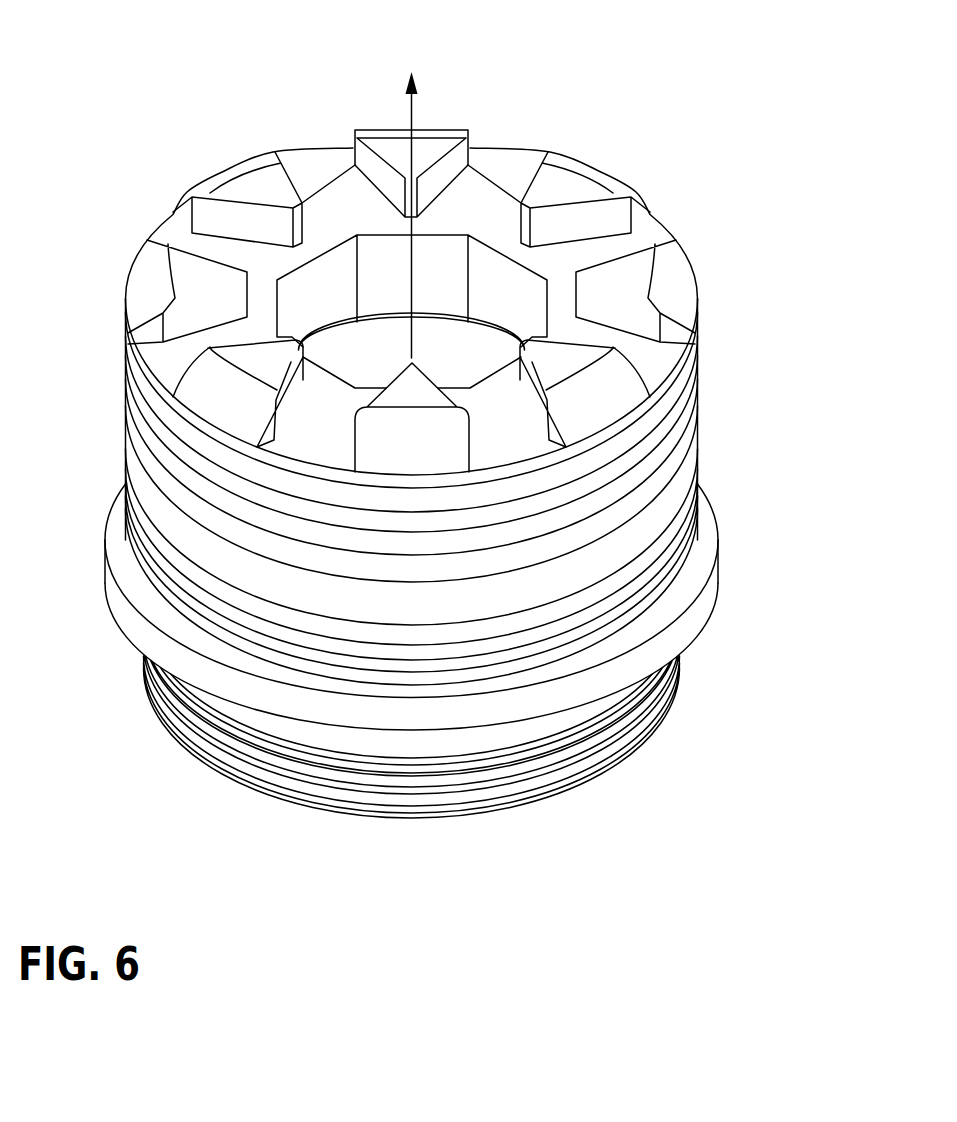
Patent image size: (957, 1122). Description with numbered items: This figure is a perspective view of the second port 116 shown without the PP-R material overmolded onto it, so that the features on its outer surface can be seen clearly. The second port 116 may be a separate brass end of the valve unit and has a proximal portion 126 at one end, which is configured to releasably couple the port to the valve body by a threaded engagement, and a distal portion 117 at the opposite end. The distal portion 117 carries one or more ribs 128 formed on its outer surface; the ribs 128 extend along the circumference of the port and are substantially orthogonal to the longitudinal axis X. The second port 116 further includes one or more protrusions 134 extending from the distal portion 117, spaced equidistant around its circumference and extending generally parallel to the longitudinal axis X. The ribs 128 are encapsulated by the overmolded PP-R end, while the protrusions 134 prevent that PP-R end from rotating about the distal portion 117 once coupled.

The second port 116 is at (168, 117).
The distal portion 117 is at (125, 355).
The protrusions 134 is at (555, 192).
The ribs 128 is at (661, 482).
The proximal portion 126 is at (177, 720).